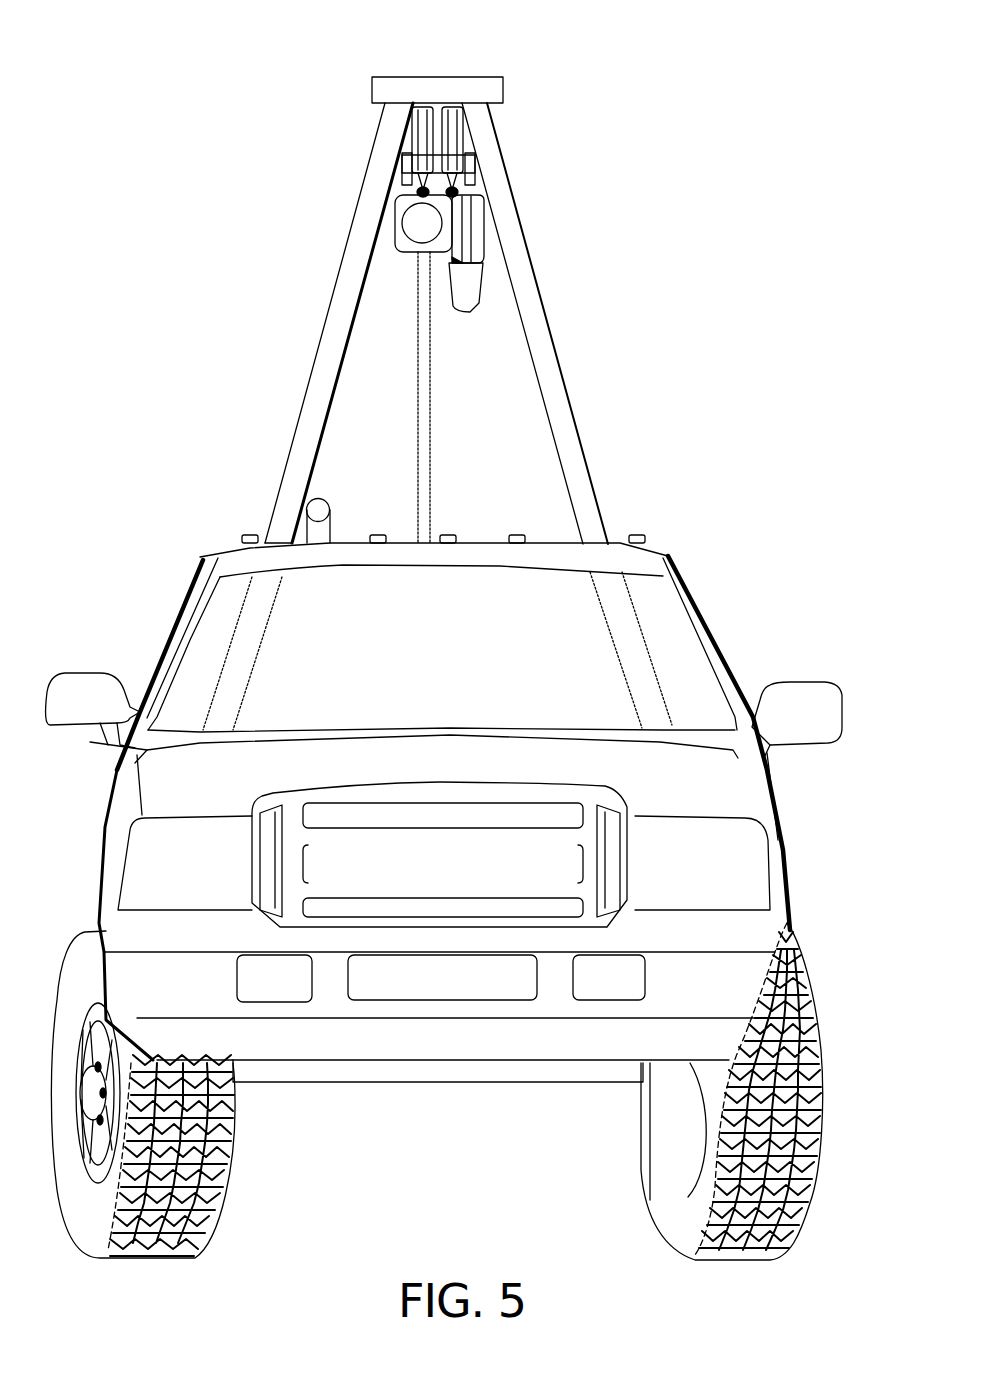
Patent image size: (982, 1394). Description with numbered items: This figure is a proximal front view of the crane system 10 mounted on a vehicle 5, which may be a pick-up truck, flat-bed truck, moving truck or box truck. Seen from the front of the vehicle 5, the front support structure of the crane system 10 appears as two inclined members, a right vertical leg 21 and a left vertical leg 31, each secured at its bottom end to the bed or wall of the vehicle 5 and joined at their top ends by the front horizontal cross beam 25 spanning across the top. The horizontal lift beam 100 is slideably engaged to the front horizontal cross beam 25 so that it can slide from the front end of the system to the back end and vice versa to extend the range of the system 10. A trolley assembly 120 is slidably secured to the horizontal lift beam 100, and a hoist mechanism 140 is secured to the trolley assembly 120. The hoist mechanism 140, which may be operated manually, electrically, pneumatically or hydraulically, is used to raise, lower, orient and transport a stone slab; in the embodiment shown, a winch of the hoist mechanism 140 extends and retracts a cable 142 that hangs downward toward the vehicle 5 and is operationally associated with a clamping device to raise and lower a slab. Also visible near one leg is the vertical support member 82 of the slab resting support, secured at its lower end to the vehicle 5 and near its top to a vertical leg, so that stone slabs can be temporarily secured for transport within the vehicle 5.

The crane system 10 is at (202, 108).
The vehicle 5 is at (137, 870).
The right vertical leg 21 is at (335, 320).
The front horizontal cross beam 25 is at (418, 95).
The left vertical leg 31 is at (533, 303).
The vertical support member 82 is at (318, 505).
The horizontal lift beam 100 is at (437, 140).
The trolley assembly 120 is at (467, 165).
The hoist mechanism 140 is at (440, 207).
The cable 142 is at (430, 477).